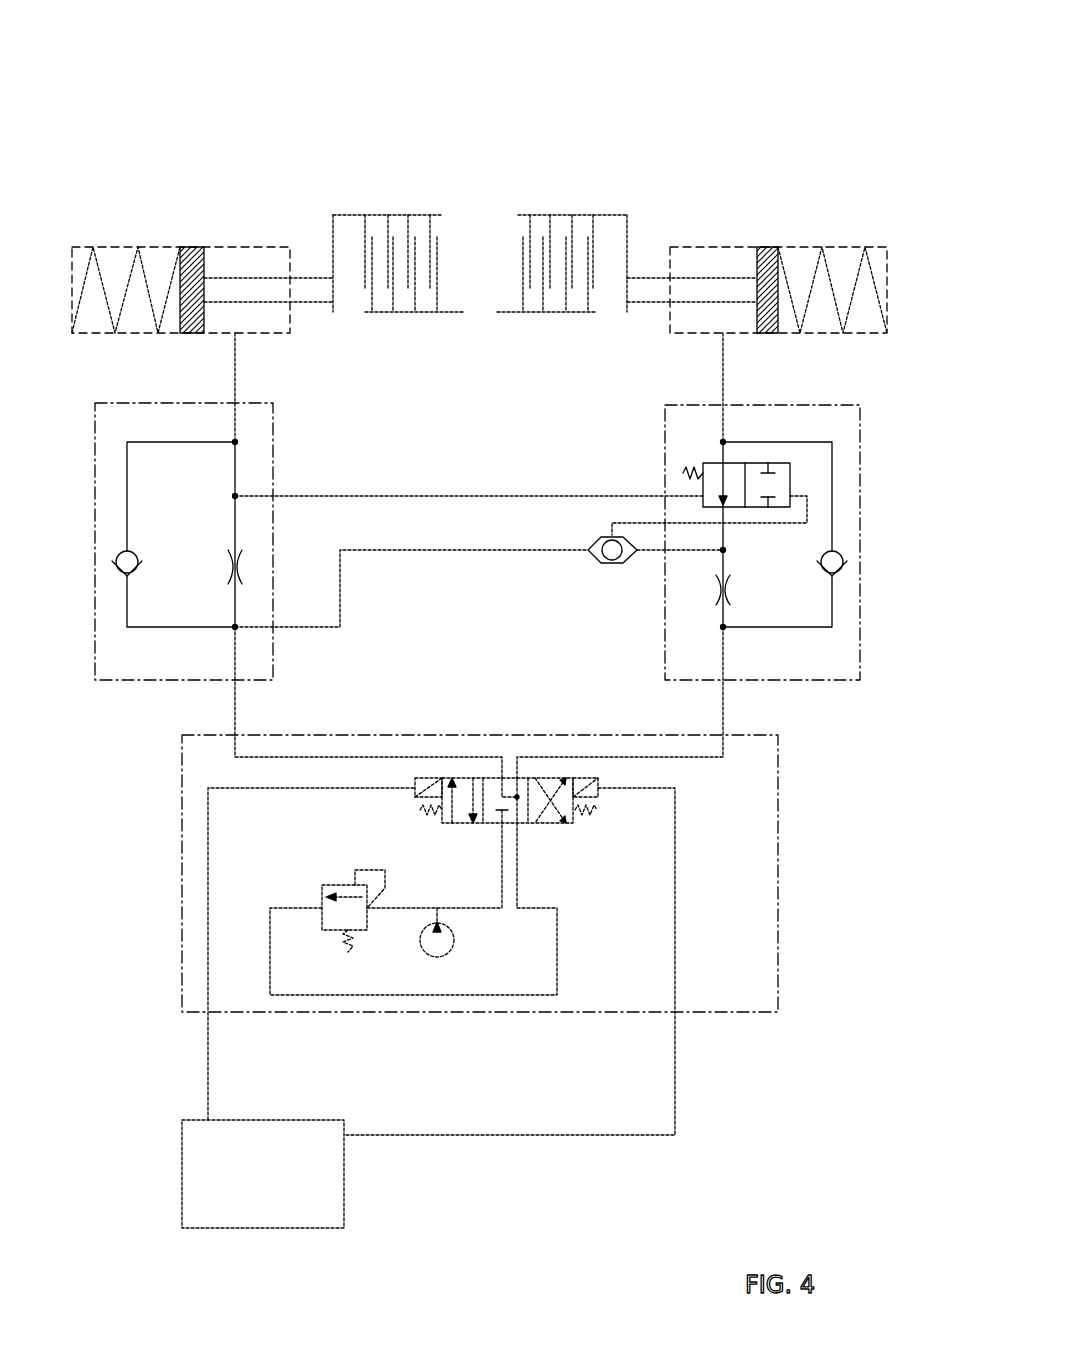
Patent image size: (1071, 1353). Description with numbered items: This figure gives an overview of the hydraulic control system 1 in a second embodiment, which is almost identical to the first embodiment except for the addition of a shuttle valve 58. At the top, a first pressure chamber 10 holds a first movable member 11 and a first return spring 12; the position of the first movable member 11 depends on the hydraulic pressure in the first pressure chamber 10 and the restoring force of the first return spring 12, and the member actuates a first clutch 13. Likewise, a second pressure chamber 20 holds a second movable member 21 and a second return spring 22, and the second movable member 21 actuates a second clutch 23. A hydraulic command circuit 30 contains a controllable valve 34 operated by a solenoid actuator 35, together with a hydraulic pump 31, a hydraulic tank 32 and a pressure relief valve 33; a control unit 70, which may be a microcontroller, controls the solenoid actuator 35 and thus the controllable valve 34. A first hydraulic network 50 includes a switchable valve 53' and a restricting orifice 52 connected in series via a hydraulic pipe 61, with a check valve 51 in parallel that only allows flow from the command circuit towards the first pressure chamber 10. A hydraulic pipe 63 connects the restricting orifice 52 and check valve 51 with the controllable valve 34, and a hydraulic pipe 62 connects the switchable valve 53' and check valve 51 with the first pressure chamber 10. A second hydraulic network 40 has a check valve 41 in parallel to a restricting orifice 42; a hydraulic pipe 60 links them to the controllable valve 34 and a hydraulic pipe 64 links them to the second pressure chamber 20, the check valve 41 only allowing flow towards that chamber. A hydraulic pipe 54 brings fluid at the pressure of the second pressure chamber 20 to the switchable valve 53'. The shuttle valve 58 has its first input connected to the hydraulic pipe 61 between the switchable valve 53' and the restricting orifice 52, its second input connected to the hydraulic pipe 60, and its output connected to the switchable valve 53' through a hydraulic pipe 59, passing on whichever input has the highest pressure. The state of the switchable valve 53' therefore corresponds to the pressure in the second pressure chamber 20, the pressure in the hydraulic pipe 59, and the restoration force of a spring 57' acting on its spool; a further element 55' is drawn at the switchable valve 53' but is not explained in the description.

The hydraulic control system 1 is at (710, 100).
The first pressure chamber 10 is at (718, 263).
The first movable member 11 is at (767, 263).
The first return spring 12 is at (823, 255).
The first clutch 13 is at (567, 205).
The second pressure chamber 20 is at (240, 263).
The second movable member 21 is at (193, 263).
The second return spring 22 is at (94, 260).
The second clutch 23 is at (403, 202).
The hydraulic command circuit 30 is at (522, 935).
The hydraulic pump 31 is at (452, 955).
The hydraulic tank 32 is at (530, 997).
The pressure relief valve 33 is at (328, 875).
The controllable valve 34 is at (545, 843).
The solenoid actuator 35 is at (418, 792).
The second hydraulic network 40 is at (181, 585).
The check valve 41 is at (117, 555).
The restricting orifice 42 is at (245, 562).
The first hydraulic network 50 is at (760, 545).
The check valve 51 is at (845, 552).
The restricting orifice 52 is at (712, 583).
The switchable valve 53' is at (821, 454).
The hydraulic pipe 54 is at (362, 493).
The valve control port 55' is at (649, 437).
The spring 57' is at (651, 476).
The shuttle valve 58 is at (600, 577).
The hydraulic pipe 59 is at (757, 527).
The hydraulic pipe 60 is at (240, 658).
The hydraulic pipe 61 is at (722, 558).
The hydraulic pipe 62 is at (727, 422).
The hydraulic pipe 63 is at (728, 662).
The hydraulic pipe 64 is at (238, 420).
The control unit 70 is at (322, 1212).